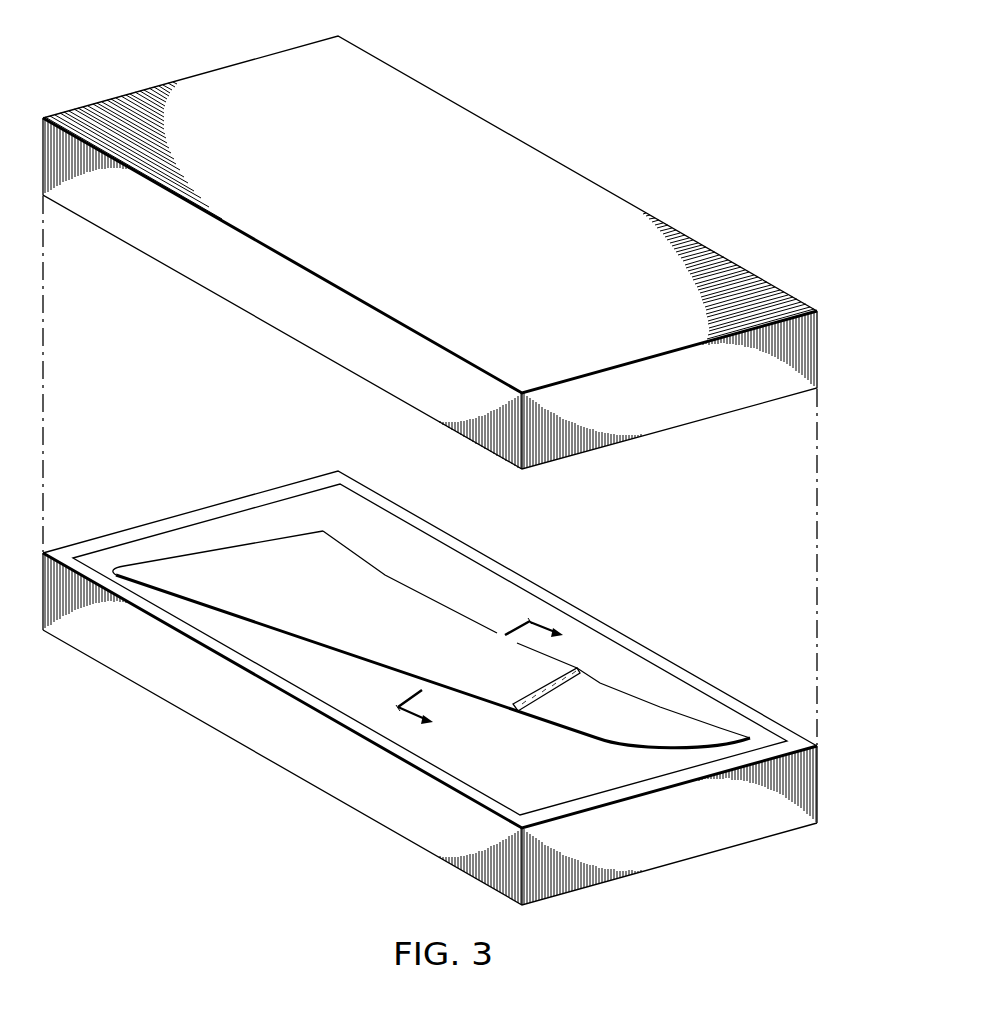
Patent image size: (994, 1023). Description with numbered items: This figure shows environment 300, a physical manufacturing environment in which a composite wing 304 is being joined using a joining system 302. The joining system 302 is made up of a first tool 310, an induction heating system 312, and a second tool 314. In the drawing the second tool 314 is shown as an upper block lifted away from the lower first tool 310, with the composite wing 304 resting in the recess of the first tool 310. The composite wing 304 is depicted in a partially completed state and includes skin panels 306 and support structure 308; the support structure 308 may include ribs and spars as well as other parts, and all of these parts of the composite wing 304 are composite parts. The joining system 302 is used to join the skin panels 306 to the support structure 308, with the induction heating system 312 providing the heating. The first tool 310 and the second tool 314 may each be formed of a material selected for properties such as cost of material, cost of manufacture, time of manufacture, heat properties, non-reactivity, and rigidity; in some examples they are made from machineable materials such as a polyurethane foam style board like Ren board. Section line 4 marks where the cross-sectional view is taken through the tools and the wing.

The environment 300 is at (636, 68).
The joining system 302 is at (203, 740).
The composite wing 304 is at (378, 555).
The skin panels 306 is at (428, 606).
The support structure 308 is at (532, 699).
The first tool 310 is at (300, 777).
The induction heating system 312 is at (263, 494).
The second tool 314 is at (233, 72).
The section line 4- 4 is at (488, 680).